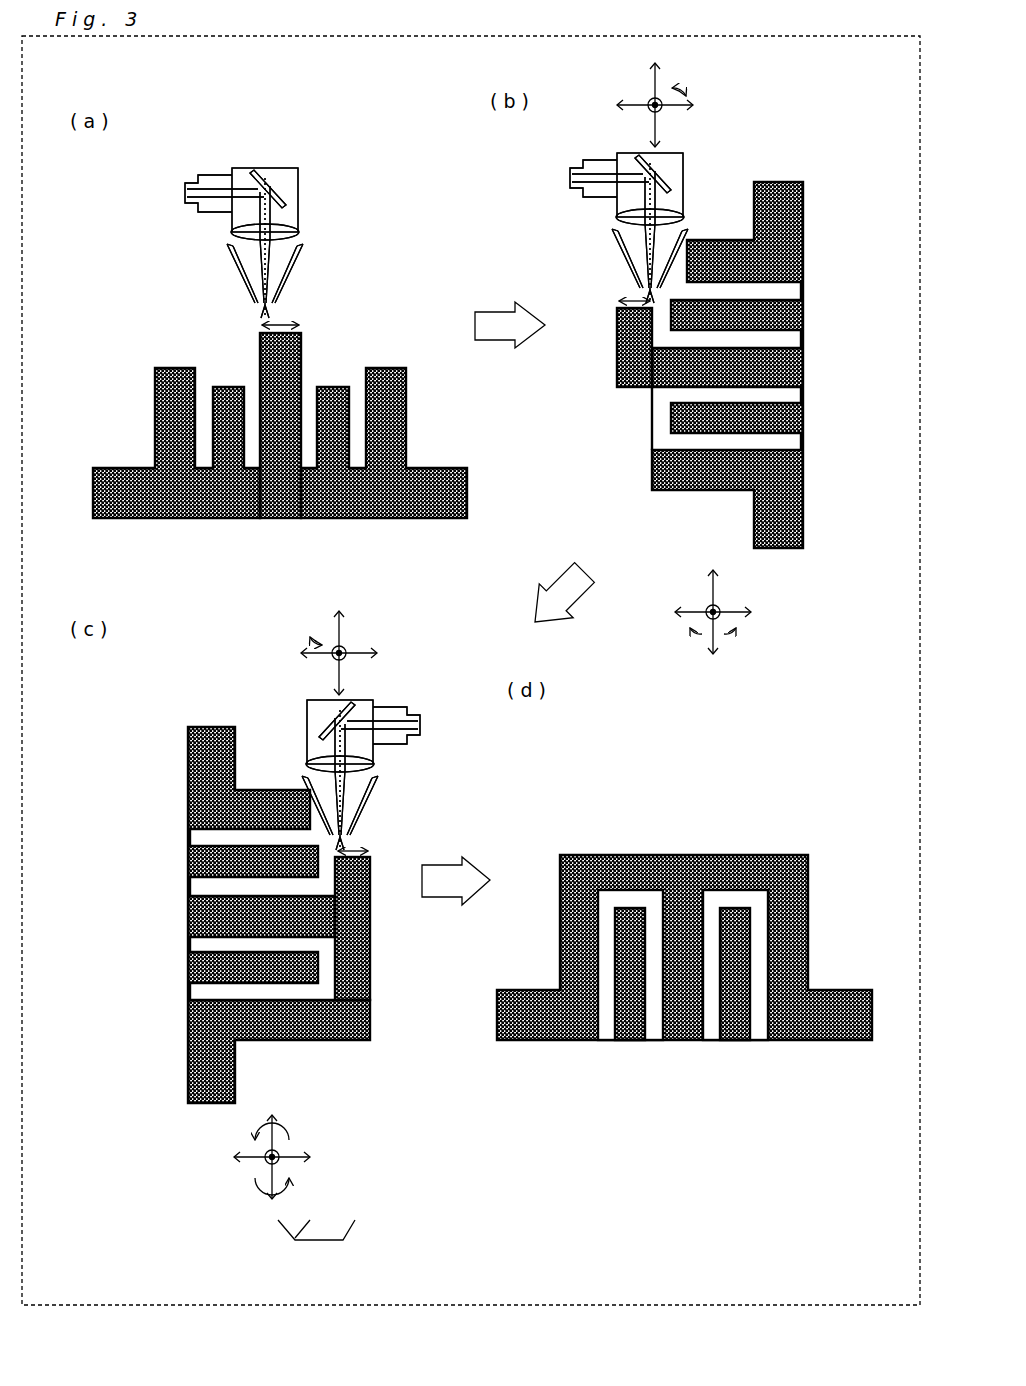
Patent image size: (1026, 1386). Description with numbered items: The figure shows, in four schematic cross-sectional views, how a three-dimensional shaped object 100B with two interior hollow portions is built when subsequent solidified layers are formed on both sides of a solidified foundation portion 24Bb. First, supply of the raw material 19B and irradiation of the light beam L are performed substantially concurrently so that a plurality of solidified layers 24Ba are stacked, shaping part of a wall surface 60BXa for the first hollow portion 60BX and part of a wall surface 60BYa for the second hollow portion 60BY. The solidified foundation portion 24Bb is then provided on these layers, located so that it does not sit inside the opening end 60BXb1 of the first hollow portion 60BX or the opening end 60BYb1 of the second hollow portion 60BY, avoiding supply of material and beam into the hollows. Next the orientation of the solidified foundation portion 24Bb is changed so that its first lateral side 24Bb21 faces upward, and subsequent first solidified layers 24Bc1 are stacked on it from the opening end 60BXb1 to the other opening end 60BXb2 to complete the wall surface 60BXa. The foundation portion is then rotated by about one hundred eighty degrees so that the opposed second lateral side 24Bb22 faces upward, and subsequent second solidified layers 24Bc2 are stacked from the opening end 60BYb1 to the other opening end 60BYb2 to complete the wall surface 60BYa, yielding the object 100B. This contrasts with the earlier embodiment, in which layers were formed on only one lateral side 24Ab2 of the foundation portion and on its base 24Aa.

The light beam L is at (262, 305).
The raw material 19B is at (263, 323).
The second hollow portion 60BY is at (202, 418).
The first hollow portion 60BX is at (357, 413).
The solidified foundation portion 24Bb is at (305, 334).
The opening end of the second hollow portion 60BYb1 is at (257, 372).
The other opening end of the second hollow portion 60BYb2 is at (298, 828).
The opening end of the first hollow portion 60BXb1 is at (307, 374).
The other opening end of the first hollow portion 60BXb2 is at (712, 292).
The wall surface for the second hollow portion 60BYa is at (187, 443).
The wall surface for the first hollow portion 60BXa is at (373, 383).
The solidified layers 24Ba is at (158, 372).
The subsequent first solidified layers 24Bc1 is at (632, 322).
The subsequent second solidified layers 24Bc2 is at (372, 868).
The first lateral side of the solidified foundation portion 24Bb21 is at (617, 370).
The second lateral side of the solidified foundation portion 24Bb22 is at (372, 882).
The three-dimensional shaped object 100B is at (803, 822).
The lateral side of the solidified foundation portion 24Ab2 is at (246, 1218).
The A base portion 24Aa is at (283, 1228).